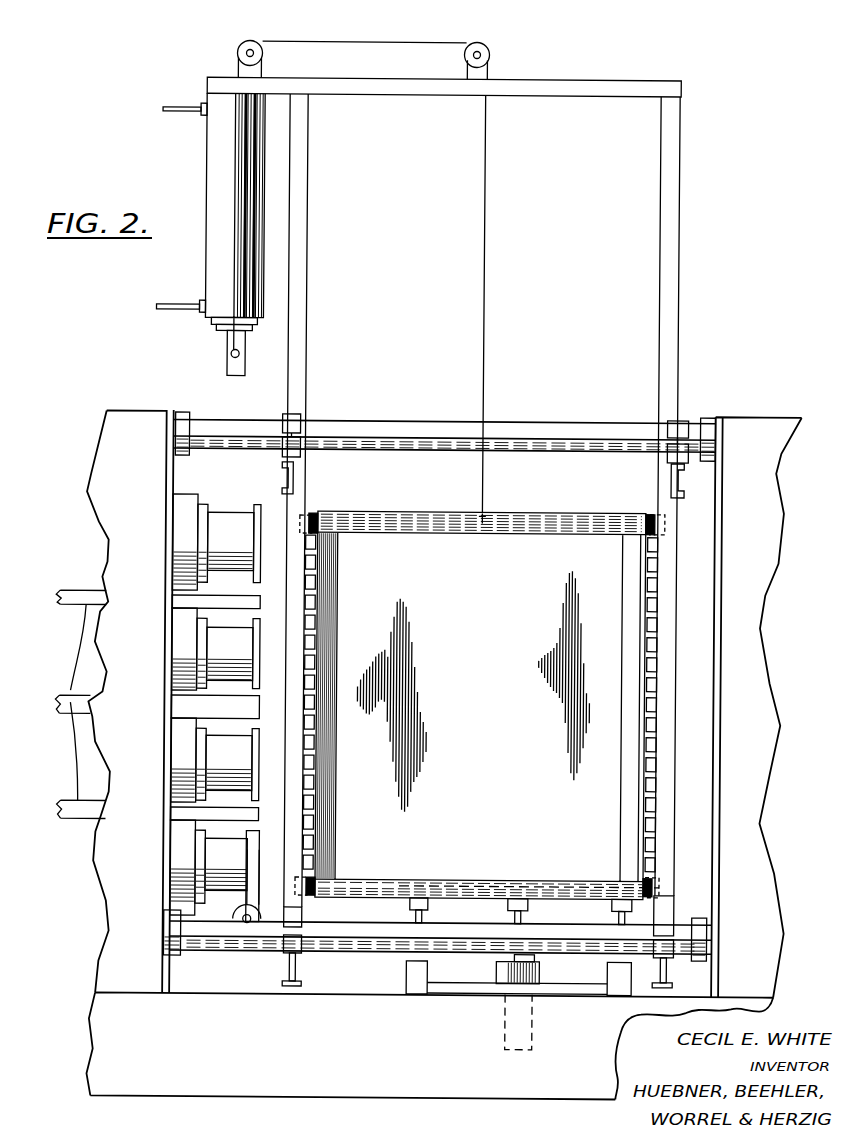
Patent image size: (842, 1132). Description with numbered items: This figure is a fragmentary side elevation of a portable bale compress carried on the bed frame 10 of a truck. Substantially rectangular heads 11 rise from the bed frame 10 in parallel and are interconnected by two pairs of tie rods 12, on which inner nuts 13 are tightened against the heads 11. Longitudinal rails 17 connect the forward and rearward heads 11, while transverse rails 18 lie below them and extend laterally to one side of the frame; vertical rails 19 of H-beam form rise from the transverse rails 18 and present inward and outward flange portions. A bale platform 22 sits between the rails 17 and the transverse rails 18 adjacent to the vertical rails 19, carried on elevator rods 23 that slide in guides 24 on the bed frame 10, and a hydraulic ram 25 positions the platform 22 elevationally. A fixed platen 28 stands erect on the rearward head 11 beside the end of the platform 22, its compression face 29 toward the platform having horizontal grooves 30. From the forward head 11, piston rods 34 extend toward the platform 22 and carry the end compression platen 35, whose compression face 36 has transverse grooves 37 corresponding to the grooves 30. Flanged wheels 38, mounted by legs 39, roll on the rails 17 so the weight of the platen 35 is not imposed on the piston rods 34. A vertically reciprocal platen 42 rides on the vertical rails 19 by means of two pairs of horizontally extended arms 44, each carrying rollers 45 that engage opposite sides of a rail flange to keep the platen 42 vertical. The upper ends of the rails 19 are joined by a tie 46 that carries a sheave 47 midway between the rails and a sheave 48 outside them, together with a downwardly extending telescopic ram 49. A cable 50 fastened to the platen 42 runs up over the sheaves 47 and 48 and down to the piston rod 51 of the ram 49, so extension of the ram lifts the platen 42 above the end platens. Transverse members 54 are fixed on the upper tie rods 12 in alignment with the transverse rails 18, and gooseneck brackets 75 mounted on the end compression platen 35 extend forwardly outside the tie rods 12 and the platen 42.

The bed frame 10 is at (390, 1090).
The heads 11 is at (108, 485).
The tie rods 12 is at (376, 432).
The inner nuts 13 is at (182, 430).
The rails 17 is at (228, 948).
The transverse rails 18 is at (299, 982).
The vertical rails 19 is at (308, 347).
The bale platform 22 is at (573, 892).
The elevator rods 23 is at (431, 915).
The guides 24 is at (432, 967).
The hydraulic ram 25 is at (525, 1035).
The platen 28 is at (648, 742).
The compression face 29 is at (648, 701).
The grooves 30 is at (648, 656).
The piston rods 34 is at (231, 542).
The end compression platen 35 is at (316, 614).
The compression face 36 is at (316, 760).
The transverse grooves 37 is at (316, 688).
The flanged wheels 38 is at (253, 921).
The legs 39 is at (257, 872).
The vertically reciprocal platen 42 is at (525, 548).
The horizontally extended arms 44 is at (322, 539).
The rollers 45 is at (311, 520).
The tie 46 is at (580, 88).
The sheave 47 is at (486, 52).
The sheave 48 is at (246, 41).
The ram 49 is at (215, 160).
The cable 50 is at (486, 250).
The piston rod 51 is at (228, 367).
The transverse members 54 is at (290, 476).
The gooseneck brackets 75 is at (83, 640).